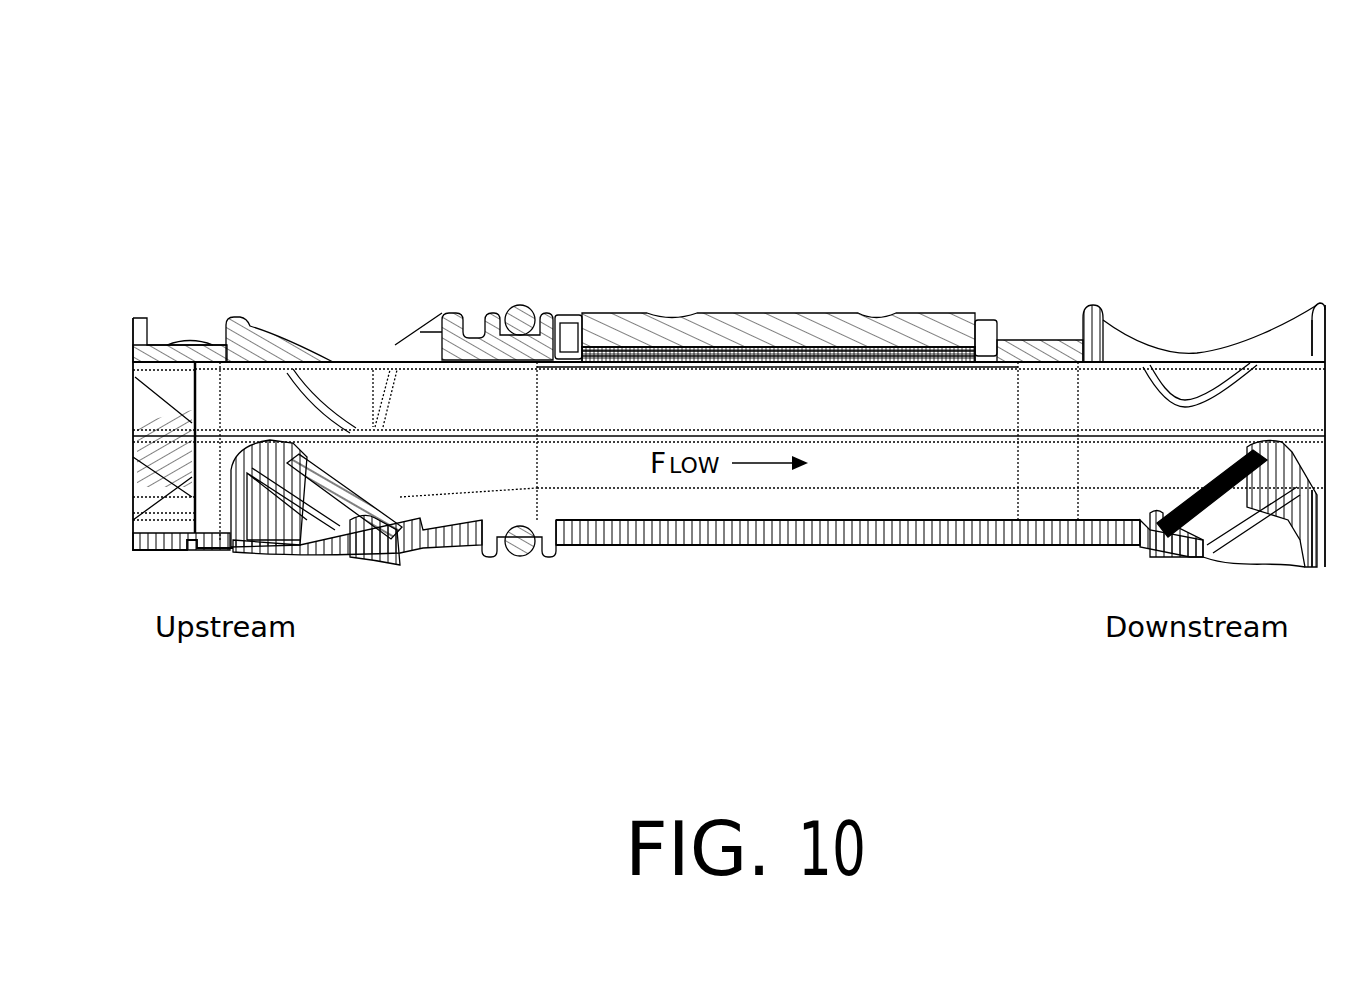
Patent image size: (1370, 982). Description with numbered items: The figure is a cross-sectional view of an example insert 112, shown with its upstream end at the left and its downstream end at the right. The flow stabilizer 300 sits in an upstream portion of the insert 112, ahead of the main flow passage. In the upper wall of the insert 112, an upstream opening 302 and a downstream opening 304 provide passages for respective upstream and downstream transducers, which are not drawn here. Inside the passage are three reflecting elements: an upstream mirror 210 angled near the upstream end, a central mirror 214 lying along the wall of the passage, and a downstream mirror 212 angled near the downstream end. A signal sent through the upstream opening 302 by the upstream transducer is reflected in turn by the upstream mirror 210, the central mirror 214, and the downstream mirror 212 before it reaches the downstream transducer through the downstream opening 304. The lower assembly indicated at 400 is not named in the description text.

The insert 112 is at (222, 103).
The flow stabilizer 300 is at (205, 300).
The upstream opening 302 is at (295, 333).
The downstream opening 304 is at (1258, 328).
The upstream mirror 210 is at (345, 478).
The downstream mirror 212 is at (1195, 493).
The central mirror 214 is at (812, 365).
The flow tube liner 400 is at (717, 615).